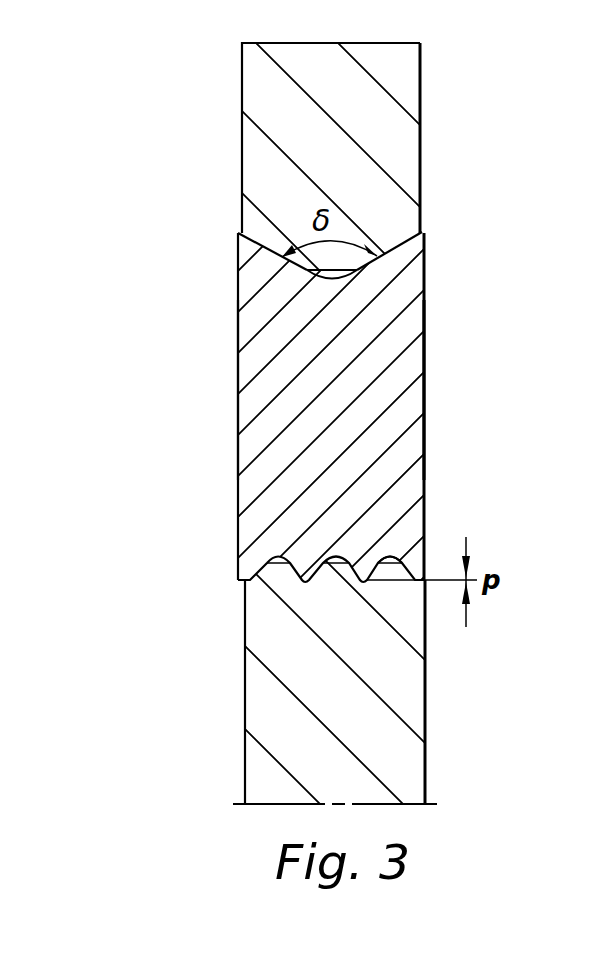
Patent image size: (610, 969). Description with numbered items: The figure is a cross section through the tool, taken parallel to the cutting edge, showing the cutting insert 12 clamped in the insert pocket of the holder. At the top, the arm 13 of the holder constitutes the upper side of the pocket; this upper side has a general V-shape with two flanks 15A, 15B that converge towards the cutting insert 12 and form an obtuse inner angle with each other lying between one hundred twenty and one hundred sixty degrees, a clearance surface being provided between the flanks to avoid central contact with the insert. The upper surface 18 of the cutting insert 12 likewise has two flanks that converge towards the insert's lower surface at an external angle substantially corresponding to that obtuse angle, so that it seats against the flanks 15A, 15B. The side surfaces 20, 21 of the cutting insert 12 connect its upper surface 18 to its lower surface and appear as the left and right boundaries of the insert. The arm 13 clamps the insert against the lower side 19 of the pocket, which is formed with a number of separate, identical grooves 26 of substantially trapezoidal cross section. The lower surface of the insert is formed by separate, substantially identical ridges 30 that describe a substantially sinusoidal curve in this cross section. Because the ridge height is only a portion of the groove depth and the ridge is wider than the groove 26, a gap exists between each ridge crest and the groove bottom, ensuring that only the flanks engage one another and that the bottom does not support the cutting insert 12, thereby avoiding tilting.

The cutting insert 12 is at (440, 462).
The arm 13 is at (421, 155).
The flank 15A is at (280, 255).
The flank 15B is at (407, 262).
The upper surface 18 is at (267, 247).
The lower side 19 is at (278, 553).
The side surface 20 is at (425, 383).
The side surface 21 is at (238, 390).
The groove 26 is at (368, 582).
The ridge 30 is at (372, 563).